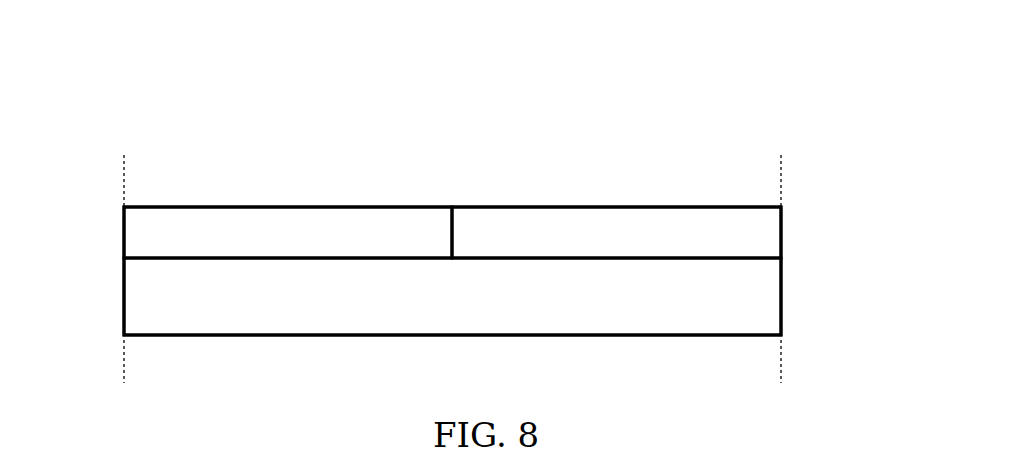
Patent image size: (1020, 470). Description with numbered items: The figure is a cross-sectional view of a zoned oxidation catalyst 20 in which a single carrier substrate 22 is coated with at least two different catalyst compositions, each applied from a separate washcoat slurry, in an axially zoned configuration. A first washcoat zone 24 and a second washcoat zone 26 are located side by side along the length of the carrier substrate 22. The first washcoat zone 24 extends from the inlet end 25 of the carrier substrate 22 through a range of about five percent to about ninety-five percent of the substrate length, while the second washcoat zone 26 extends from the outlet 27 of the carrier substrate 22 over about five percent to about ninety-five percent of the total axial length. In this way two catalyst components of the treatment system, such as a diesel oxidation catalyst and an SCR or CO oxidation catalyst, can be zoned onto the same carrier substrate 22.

The zoned oxidation catalyst 20 is at (472, 150).
The carrier substrate 22 is at (781, 310).
The first washcoat zone 24 is at (124, 222).
The inlet end 25 is at (124, 197).
The second washcoat zone 26 is at (783, 244).
The outlet 27 is at (781, 174).